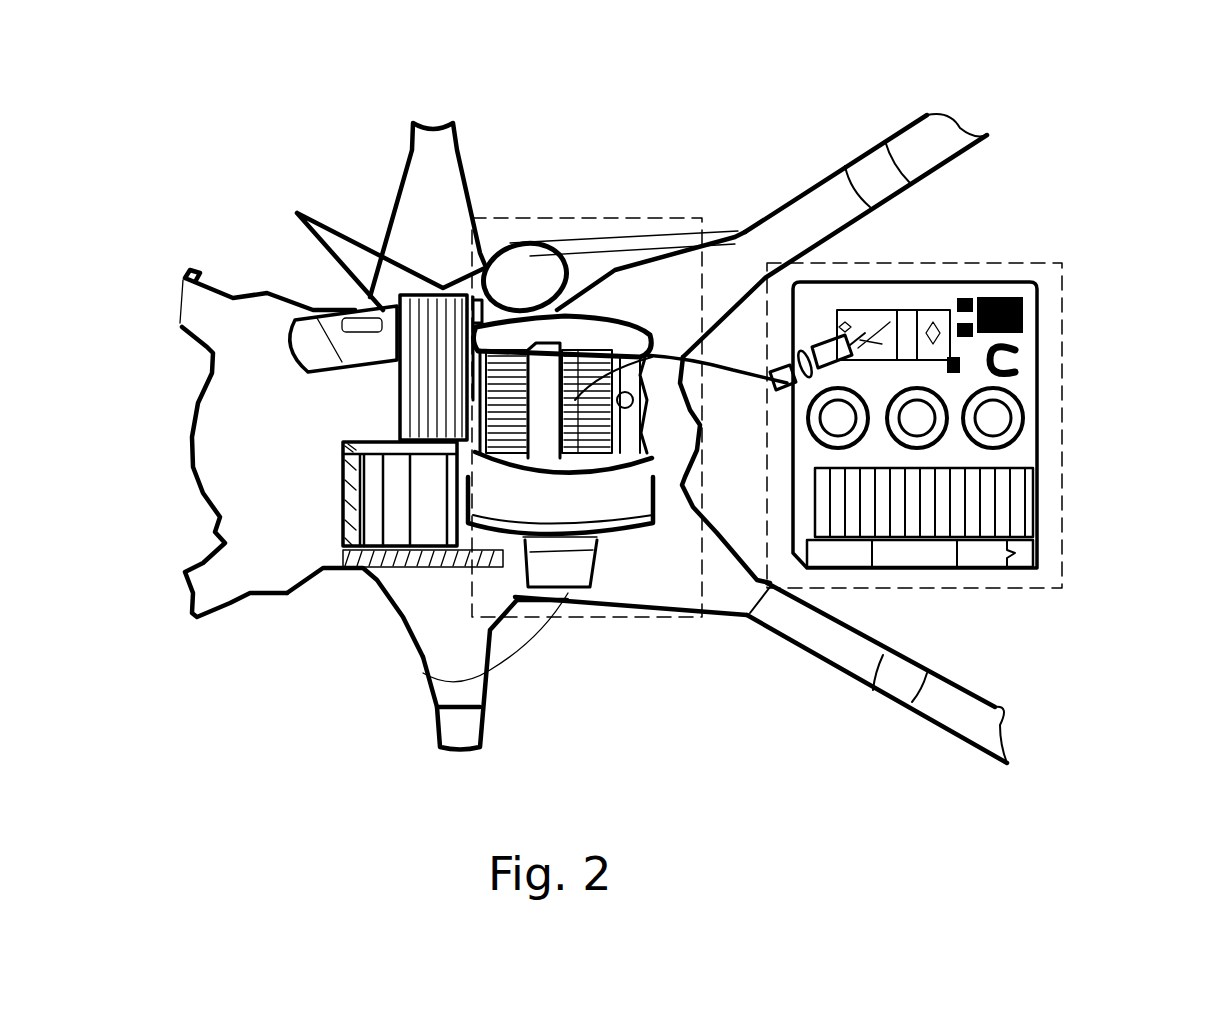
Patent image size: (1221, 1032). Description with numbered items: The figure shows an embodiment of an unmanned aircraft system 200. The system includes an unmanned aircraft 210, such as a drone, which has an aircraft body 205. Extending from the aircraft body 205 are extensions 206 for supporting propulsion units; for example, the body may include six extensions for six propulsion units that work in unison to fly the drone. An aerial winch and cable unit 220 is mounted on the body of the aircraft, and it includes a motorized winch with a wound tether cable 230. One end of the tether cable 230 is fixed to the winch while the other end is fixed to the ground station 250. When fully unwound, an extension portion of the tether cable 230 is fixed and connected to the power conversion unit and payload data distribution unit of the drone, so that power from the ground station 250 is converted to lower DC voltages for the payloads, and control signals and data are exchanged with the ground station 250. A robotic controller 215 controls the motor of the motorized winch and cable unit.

The unmanned aircraft system 200 is at (569, 645).
The aircraft body 205 is at (313, 587).
The extensions 206 is at (935, 153).
The unmanned aircraft 210 is at (245, 252).
The robotic controller 215 is at (350, 573).
The aerial winch and cable unit 220 is at (588, 583).
The tether cable 230 is at (742, 367).
The ground station 250 is at (1067, 380).